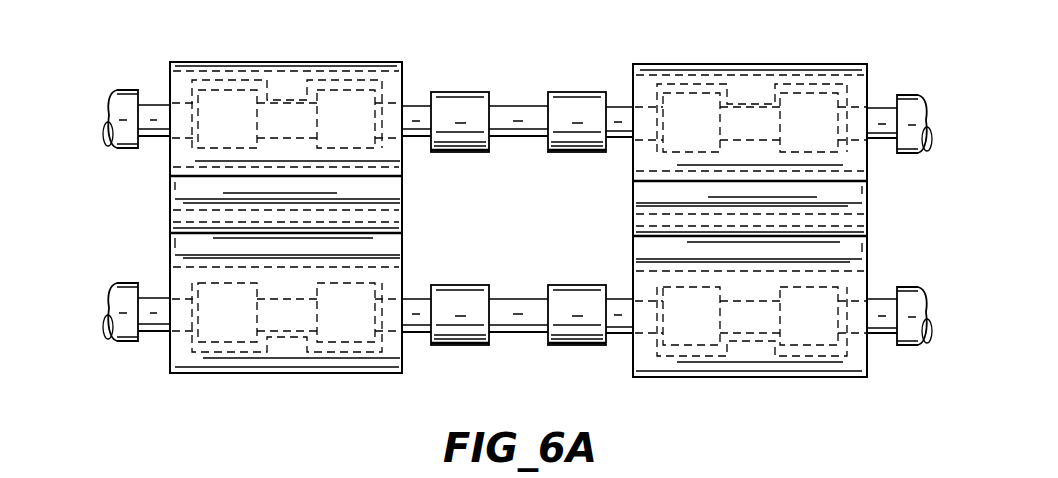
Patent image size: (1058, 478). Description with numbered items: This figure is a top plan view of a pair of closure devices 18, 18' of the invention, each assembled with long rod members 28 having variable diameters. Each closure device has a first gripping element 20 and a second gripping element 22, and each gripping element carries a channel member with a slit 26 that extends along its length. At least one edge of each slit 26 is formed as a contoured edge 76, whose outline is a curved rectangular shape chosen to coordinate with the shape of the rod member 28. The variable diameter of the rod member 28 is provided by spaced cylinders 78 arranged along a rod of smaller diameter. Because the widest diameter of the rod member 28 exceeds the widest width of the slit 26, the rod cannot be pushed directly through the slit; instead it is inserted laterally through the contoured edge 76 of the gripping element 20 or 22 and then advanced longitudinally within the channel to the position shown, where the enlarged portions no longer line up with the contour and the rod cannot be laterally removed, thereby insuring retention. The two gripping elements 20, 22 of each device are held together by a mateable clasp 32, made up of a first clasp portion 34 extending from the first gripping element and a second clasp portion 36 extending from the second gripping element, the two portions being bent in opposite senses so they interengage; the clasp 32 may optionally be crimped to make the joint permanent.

The closure device 18 is at (322, 239).
The closure device 18' is at (714, 240).
The first gripping element 20 is at (248, 382).
The second gripping element 22 is at (248, 58).
The slit 26 is at (348, 294).
The rod member 28 is at (517, 150).
The mateable clasp 32 is at (163, 212).
The first clasp portion 34 is at (397, 251).
The second clasp portion 36 is at (397, 194).
The contoured edge 76 is at (340, 78).
The spaced cylinders 78 is at (463, 105).